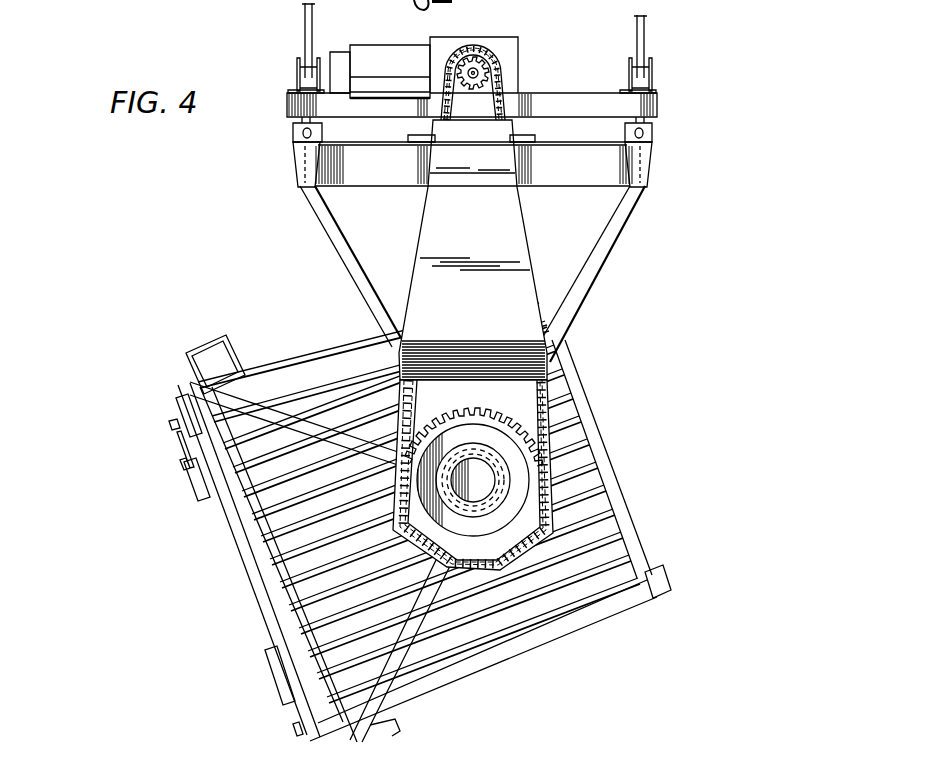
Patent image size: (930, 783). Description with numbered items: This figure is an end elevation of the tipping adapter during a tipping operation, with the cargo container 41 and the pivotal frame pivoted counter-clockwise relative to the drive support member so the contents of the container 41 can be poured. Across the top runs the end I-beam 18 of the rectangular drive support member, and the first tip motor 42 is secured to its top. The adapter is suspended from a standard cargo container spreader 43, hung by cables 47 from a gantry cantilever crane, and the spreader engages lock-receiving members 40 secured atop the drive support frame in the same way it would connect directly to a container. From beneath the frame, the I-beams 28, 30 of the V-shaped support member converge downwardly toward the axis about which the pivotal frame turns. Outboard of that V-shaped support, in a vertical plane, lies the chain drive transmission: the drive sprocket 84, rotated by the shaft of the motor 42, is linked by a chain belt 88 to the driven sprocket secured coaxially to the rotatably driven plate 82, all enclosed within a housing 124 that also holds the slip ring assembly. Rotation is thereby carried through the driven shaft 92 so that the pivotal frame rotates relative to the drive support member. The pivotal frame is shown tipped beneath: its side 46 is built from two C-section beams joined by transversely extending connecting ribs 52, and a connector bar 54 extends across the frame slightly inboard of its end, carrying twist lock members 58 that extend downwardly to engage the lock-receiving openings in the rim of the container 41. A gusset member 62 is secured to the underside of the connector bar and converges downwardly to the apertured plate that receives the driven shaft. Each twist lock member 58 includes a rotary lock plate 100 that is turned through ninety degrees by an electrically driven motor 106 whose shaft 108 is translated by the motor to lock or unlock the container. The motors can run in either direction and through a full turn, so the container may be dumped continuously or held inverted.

The end I-beam 18 is at (380, 170).
The I-beam of V-shaped support member 28 is at (327, 231).
The I-beam of V-shaped support member 30 is at (605, 245).
The lock-receiving member 40 is at (296, 131).
The cargo container 41 is at (600, 612).
The first tip motor 42 is at (457, 42).
The cargo container spreader 43 is at (582, 100).
The side of pivotal frame 46 is at (210, 342).
The cable 47 is at (643, 35).
The connecting rib 52 is at (238, 353).
The connector bar 54 is at (242, 567).
The twist lock member 58 is at (131, 437).
The gusset member 62 is at (278, 413).
The rotatably driven plate 82 is at (462, 433).
The drive sprocket 84 is at (487, 60).
The chain belt 88 is at (493, 97).
The driven shaft 92 is at (533, 473).
The rotary lock plate 100 is at (177, 413).
The motor 106 is at (193, 480).
The shaft 108 is at (178, 450).
The housing 124 is at (502, 237).